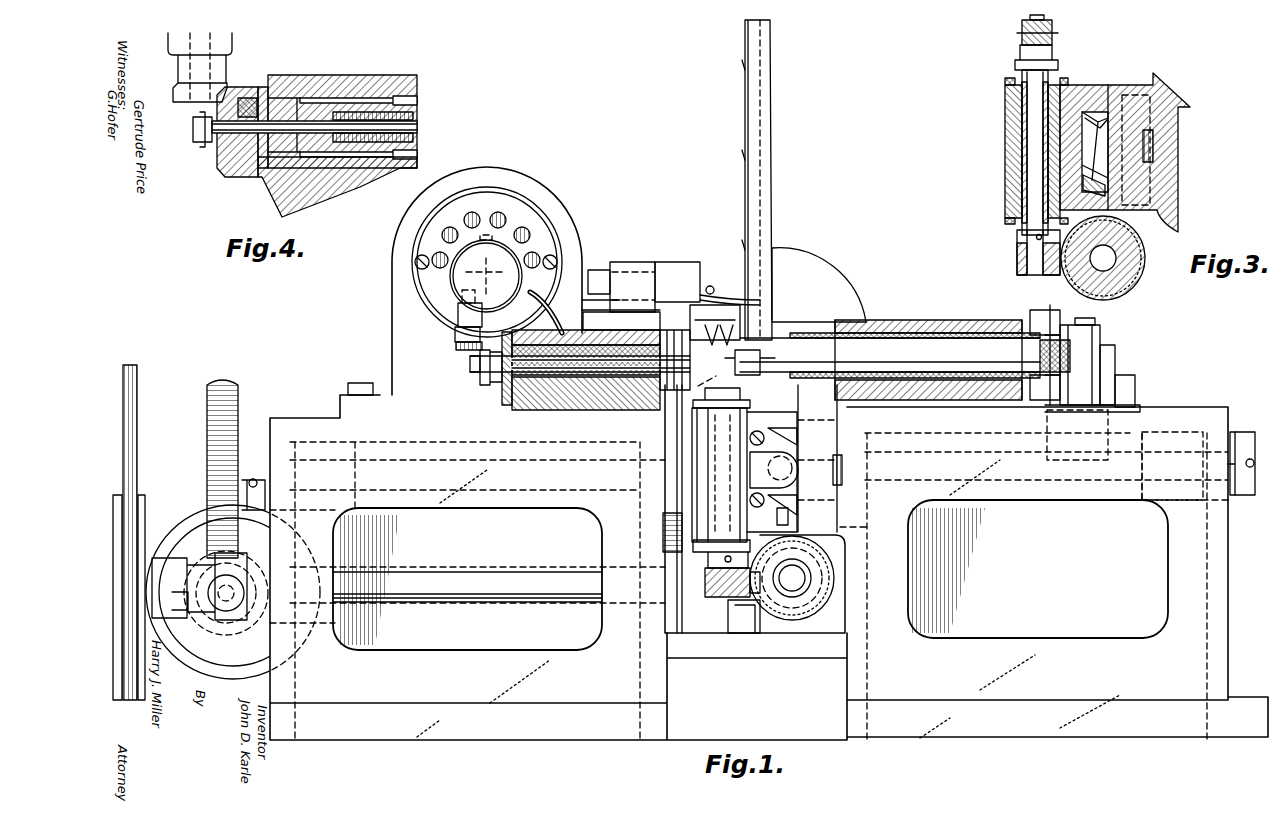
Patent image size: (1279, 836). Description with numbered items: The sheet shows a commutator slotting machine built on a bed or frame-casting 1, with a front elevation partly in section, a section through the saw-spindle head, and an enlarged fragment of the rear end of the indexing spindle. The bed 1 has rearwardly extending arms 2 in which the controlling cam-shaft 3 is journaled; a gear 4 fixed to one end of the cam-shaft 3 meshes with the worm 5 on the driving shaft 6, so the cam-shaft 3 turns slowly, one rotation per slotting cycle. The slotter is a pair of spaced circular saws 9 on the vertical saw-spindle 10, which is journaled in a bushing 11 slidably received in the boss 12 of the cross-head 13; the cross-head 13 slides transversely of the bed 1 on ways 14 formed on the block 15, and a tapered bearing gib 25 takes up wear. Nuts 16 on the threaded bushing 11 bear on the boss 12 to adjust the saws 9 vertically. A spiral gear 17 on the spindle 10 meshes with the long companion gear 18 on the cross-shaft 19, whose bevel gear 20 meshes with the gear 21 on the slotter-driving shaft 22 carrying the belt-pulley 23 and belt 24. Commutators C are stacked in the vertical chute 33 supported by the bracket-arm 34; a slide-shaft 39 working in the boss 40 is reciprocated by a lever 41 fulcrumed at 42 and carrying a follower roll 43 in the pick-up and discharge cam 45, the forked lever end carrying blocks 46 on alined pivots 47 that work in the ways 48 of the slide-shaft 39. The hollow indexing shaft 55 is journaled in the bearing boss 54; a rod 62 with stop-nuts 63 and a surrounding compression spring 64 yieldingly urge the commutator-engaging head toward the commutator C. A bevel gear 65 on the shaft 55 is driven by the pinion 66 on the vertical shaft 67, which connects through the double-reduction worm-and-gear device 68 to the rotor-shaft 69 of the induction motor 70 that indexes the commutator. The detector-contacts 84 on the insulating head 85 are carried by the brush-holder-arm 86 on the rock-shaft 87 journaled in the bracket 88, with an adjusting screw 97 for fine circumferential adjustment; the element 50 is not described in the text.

In FIG. 3, the bed or frame-casting 1 is at (1160, 148).
In FIG. 1, the bed or frame-casting 1 is at (492, 734).
In FIG. 1, the rearwardly extending arms 2 is at (190, 520).
In FIG. 1, the controlling cam-shaft 3 is at (412, 448).
In FIG. 1, the gear 4 is at (226, 383).
In FIG. 1, the worm 5 is at (206, 572).
In FIG. 1, the driving shaft 6 is at (240, 591).
In FIG. 3, the circular slot-cutters or saws 9 is at (1022, 33).
In FIG. 1, the circular slot-cutters or saws 9 is at (746, 372).
In FIG. 3, the saw-spindle 10 is at (1030, 143).
In FIG. 1, the saw-spindle 10 is at (680, 425).
In FIG. 3, the bushing 11 is at (1024, 158).
In FIG. 1, the bushing 11 is at (677, 439).
In FIG. 3, the boss 12 is at (1008, 173).
In FIG. 1, the boss 12 is at (697, 505).
In FIG. 3, the cross-head 13 is at (1087, 95).
In FIG. 1, the cross-head 13 is at (750, 519).
In FIG. 3, the ways 14 is at (1095, 128).
In FIG. 1, the ways 14 is at (782, 432).
In FIG. 3, the block 15 is at (1123, 112).
In FIG. 1, the block 15 is at (829, 441).
In FIG. 3, the nuts 16 is at (1005, 82).
In FIG. 1, the nuts 16 is at (752, 403).
In FIG. 3, the spiral gear 17 is at (1017, 260).
In FIG. 1, the spiral gear 17 is at (706, 587).
In FIG. 3, the companion gear 18 is at (1140, 273).
In FIG. 1, the companion gear 18 is at (836, 578).
In FIG. 3, the cross-shaft 19 is at (1110, 254).
In FIG. 1, the cross-shaft 19 is at (797, 588).
In FIG. 1, the bevel gear 20 is at (821, 609).
In FIG. 1, the companion gear 21 is at (777, 623).
In FIG. 1, the slotter-driving shaft 22 is at (441, 578).
In FIG. 1, the belt-pulley 23 is at (144, 498).
In FIG. 1, the belt 24 is at (137, 428).
In FIG. 3, the bearing gib 25 is at (1107, 178).
In FIG. 1, the bearing gib 25 is at (792, 497).
In FIG. 1, the vertical magazine or chute 33 is at (771, 168).
In FIG. 1, the bracket-arm 34 is at (830, 272).
In FIG. 1, the slide-shaft 39 is at (895, 338).
In FIG. 1, the boss 40 is at (939, 322).
In FIG. 1, the lever 41 is at (1086, 347).
In FIG. 1, the fulcrum 42 is at (1126, 392).
In FIG. 1, the follower roll 43 is at (1113, 377).
In FIG. 1, the commutator pick-up and discharge cam 45 is at (1136, 400).
In FIG. 1, the blocks 46 is at (1041, 357).
In FIG. 1, the alined pivots 47 is at (1041, 321).
In FIG. 1, the ways 48 is at (1051, 331).
In FIG. 1, the feed shaft 50 is at (787, 352).
In FIG. 4, the bearing boss 54 is at (343, 78).
In FIG. 1, the bearing boss 54 is at (563, 330).
In FIG. 4, the commutator-indexing shaft 55 is at (296, 96).
In FIG. 1, the commutator-indexing shaft 55 is at (512, 372).
In FIG. 4, the rod 62 is at (318, 150).
In FIG. 1, the rod 62 is at (529, 392).
In FIG. 4, the stop-nuts 63 is at (200, 142).
In FIG. 1, the stop-nuts 63 is at (474, 372).
In FIG. 4, the compression spring 64 is at (416, 116).
In FIG. 1, the compression spring 64 is at (563, 395).
In FIG. 4, the bevel gear 65 is at (218, 95).
In FIG. 1, the bevel gear 65 is at (486, 385).
In FIG. 1, the pinion 66 is at (456, 348).
In FIG. 4, the vertical shaft 67 is at (226, 68).
In FIG. 1, the vertical shaft 67 is at (455, 332).
In FIG. 1, the double-reduction worm-and-gear device 68 is at (477, 308).
In FIG. 1, the rotor-shaft 69 is at (490, 265).
In FIG. 1, the induction motor 70 is at (545, 223).
In FIG. 1, the detector-contacts or brushes 84 is at (714, 322).
In FIG. 1, the insulating head 85 is at (726, 300).
In FIG. 1, the brush-holder-arm 86 is at (755, 300).
In FIG. 1, the rock-shaft 87 is at (631, 266).
In FIG. 1, the bracket 88 is at (671, 264).
In FIG. 1, the adjusting screw 97 is at (712, 287).
In FIG. 1, the commutator C is at (700, 385).